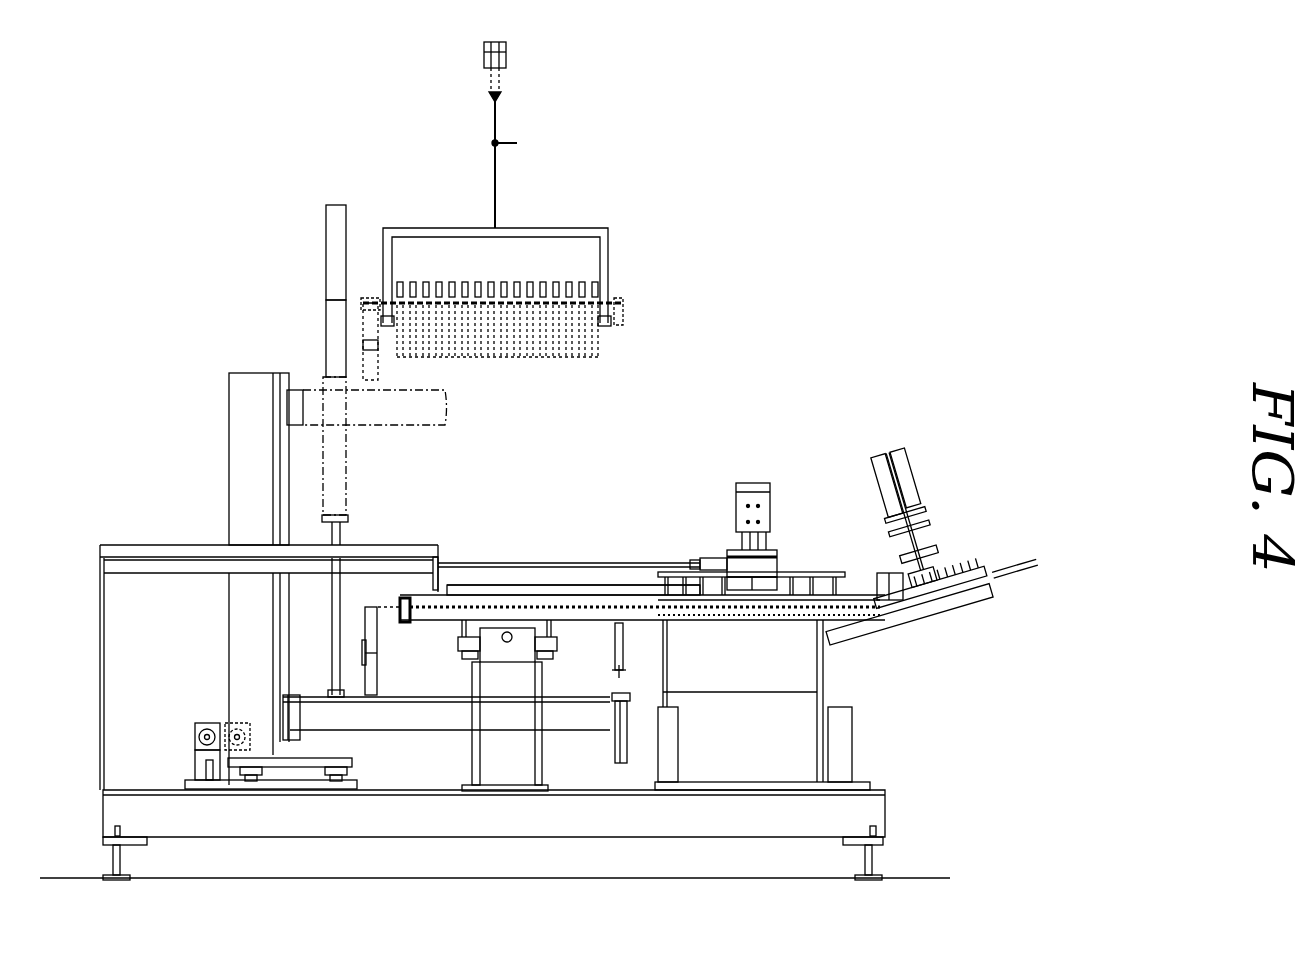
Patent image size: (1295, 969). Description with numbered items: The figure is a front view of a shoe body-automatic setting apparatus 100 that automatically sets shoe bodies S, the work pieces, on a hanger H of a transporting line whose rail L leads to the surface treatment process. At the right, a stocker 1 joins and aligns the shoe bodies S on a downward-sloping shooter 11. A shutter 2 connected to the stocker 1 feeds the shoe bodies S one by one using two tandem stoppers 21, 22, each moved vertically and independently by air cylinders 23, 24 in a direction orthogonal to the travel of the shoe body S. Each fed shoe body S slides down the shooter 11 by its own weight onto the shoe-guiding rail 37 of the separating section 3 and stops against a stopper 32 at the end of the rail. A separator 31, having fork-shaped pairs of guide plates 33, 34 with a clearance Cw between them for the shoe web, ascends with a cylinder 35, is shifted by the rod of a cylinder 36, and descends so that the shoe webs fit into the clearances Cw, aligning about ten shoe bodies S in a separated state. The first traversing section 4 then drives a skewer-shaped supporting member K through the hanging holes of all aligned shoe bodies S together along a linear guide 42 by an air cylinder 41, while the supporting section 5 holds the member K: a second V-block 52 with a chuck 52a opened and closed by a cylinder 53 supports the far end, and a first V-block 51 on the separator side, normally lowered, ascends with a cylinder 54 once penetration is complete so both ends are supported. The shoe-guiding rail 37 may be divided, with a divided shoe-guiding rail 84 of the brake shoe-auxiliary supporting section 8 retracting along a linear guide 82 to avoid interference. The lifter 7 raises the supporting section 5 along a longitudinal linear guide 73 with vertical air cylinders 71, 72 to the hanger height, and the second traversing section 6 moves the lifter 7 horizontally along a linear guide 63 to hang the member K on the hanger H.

The stocker 1 is at (917, 556).
The shooter 11 is at (929, 583).
The shutter 2 is at (904, 511).
The stopper 21 is at (922, 577).
The stopper 22 is at (919, 554).
The air cylinder 23 is at (887, 486).
The air cylinder 24 is at (905, 478).
The separating section 3 is at (765, 612).
The separator 31 is at (812, 572).
The stopper 32 is at (838, 620).
The guide plate 33 is at (848, 600).
The guide plate 34 is at (810, 595).
The cylinder 35 is at (752, 498).
The cylinder 36 is at (776, 556).
The shoe-guiding rail 37 is at (735, 620).
The first traversing section 4 is at (444, 540).
The air cylinder 41 is at (157, 568).
The linear guide 42 is at (497, 590).
The supporting section 5 is at (357, 628).
The first V-block 51 is at (627, 316).
The second V-block 52 is at (365, 303).
The chuck 52a is at (405, 622).
The cylinder 53 is at (374, 650).
The cylinder 54 is at (630, 740).
The second traversing section 6 is at (180, 747).
The linear guide 63 is at (252, 782).
The lifter 7 is at (339, 451).
The vertical air cylinder 71 is at (326, 243).
The vertical air cylinder 72 is at (326, 330).
The longitudinal linear guide 73 is at (289, 486).
The brake shoe-auxiliary supporting section 8 is at (509, 705).
The linear guide 82 is at (472, 654).
The divided shoe-guiding rail 84 is at (584, 620).
The shoe body-automatic setting apparatus 100 is at (735, 376).
The rail of transporting line L is at (506, 57).
The hanger H is at (560, 228).
The skewer-shaped supporting member K is at (593, 300).
The shoe body S is at (573, 360).
The clearance Cw is at (747, 713).